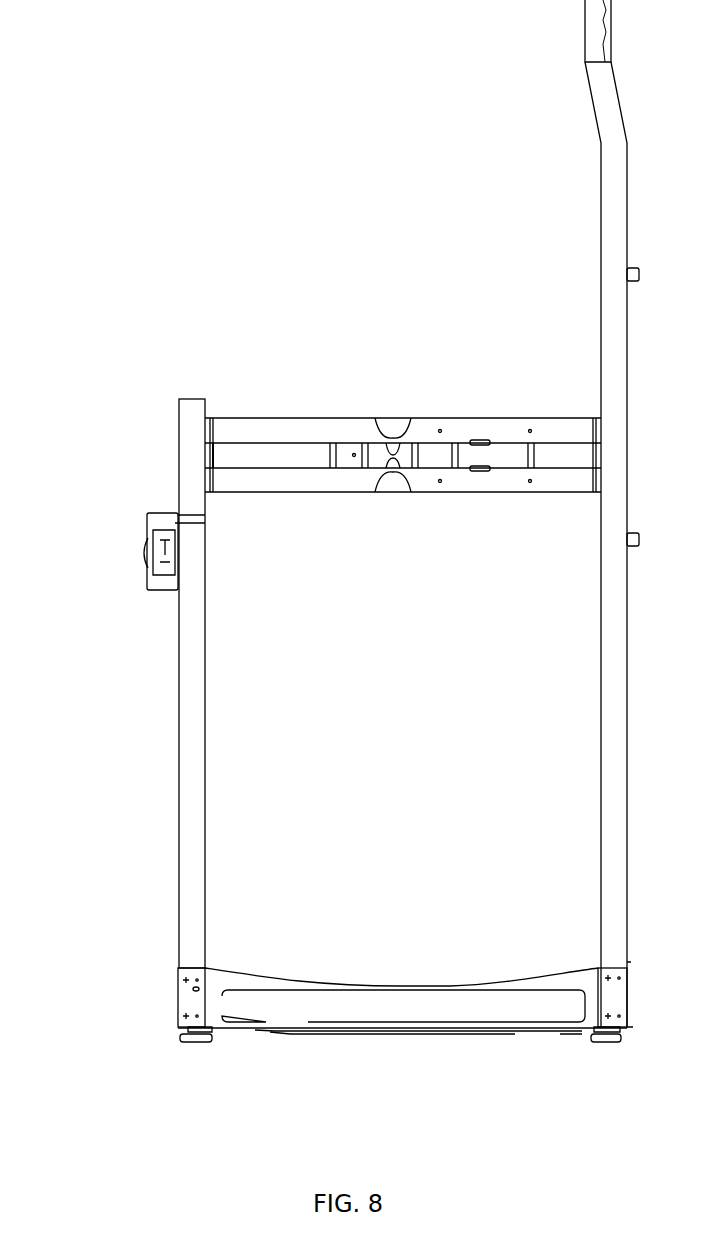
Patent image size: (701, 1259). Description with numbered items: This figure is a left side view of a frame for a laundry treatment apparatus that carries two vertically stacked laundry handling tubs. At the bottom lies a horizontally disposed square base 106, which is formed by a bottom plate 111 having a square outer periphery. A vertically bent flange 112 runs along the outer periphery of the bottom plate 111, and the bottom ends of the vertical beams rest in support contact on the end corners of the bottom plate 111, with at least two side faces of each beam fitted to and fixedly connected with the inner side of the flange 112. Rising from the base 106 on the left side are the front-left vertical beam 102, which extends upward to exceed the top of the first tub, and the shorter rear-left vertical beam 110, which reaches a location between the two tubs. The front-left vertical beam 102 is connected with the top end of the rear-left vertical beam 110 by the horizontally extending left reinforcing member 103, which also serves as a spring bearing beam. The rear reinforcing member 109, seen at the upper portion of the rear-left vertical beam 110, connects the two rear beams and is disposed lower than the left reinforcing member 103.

The front-left vertical beam 102 is at (615, 255).
The left reinforcing member 103 is at (338, 435).
The base 106 is at (552, 1013).
The rear reinforcing member 109 is at (163, 520).
The rear-left vertical beam 110 is at (195, 468).
The bottom plate 111 is at (378, 1035).
The flange 112 is at (443, 1005).